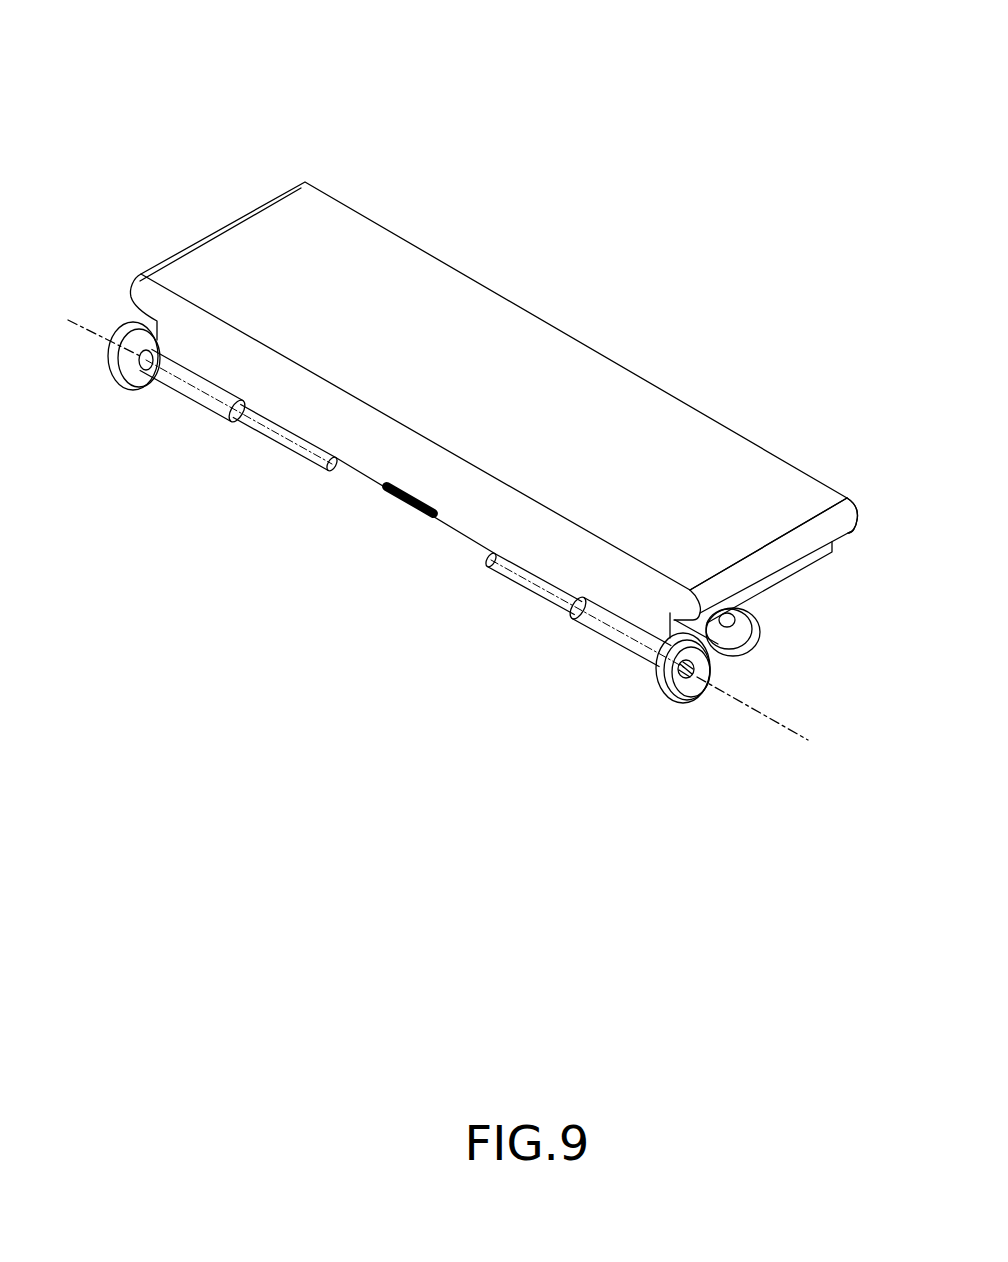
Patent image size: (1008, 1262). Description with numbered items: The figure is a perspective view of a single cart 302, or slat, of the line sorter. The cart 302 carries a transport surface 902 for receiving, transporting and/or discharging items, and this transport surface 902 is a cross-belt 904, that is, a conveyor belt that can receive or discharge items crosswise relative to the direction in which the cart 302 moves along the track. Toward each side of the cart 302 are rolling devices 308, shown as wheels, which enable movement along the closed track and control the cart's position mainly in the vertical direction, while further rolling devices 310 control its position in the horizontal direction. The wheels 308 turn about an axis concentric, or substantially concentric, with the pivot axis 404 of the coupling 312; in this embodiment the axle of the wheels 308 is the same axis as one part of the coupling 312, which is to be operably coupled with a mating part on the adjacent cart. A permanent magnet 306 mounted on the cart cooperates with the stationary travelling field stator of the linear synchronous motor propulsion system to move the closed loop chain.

The cart 302 is at (250, 115).
The transport surface 902 is at (548, 340).
The cross-belt 904 is at (845, 497).
The rolling devices 308 is at (143, 388).
The pivot axis 404 is at (88, 326).
The coupling 312 is at (297, 457).
The permanent magnet 306 is at (413, 518).
The rolling devices 310 is at (750, 650).